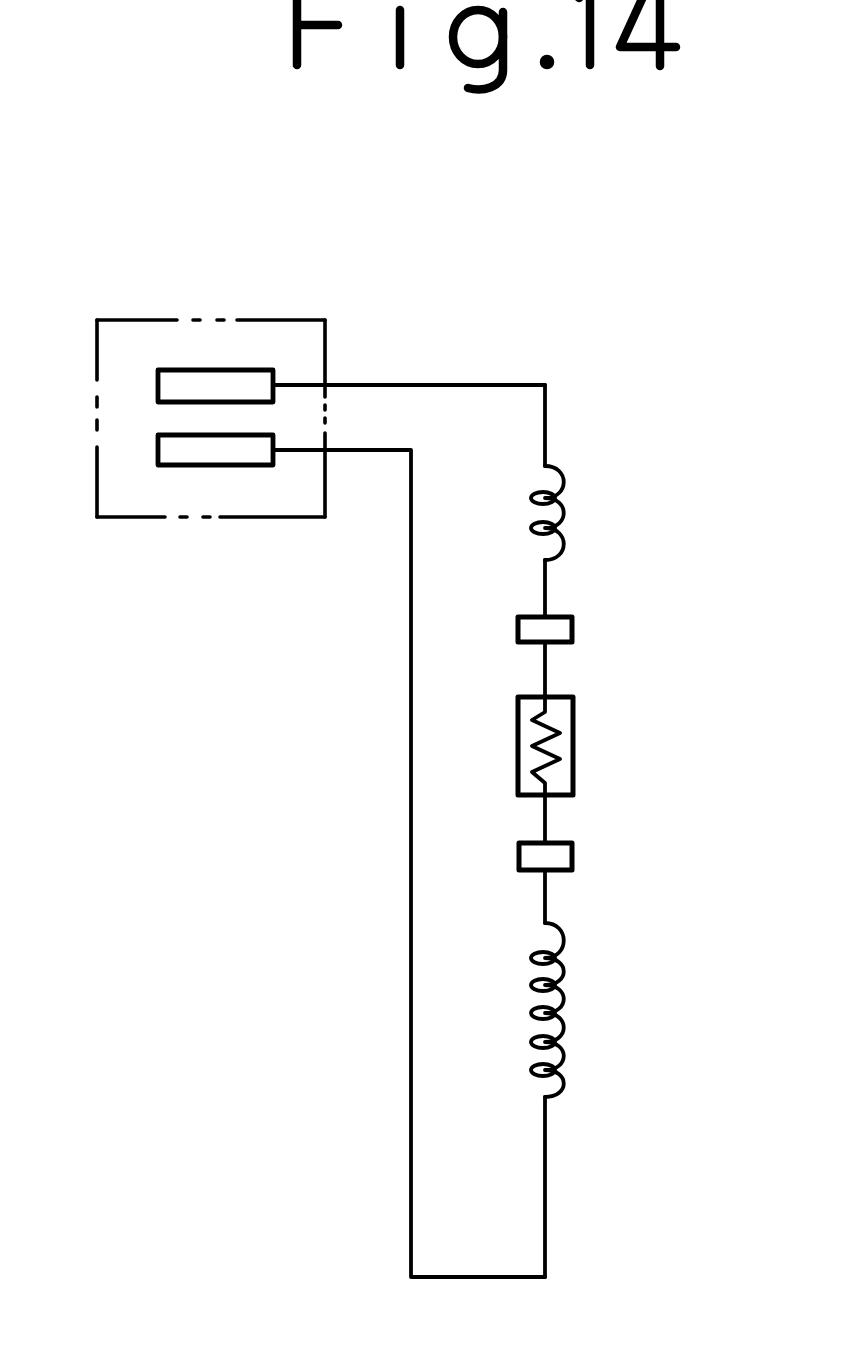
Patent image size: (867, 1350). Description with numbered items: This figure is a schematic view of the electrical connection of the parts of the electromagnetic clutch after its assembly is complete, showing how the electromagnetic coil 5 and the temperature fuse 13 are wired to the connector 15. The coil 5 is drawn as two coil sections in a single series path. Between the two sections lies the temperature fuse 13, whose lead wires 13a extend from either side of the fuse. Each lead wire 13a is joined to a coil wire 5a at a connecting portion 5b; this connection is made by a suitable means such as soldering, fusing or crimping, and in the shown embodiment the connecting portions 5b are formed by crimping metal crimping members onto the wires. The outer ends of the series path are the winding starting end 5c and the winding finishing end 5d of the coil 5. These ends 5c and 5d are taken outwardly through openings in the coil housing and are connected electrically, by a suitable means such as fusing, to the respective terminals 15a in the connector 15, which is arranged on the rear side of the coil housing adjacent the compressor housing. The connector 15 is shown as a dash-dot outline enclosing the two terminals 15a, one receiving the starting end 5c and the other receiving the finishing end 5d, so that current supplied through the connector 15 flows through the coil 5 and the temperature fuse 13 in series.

The connector 15 is at (247, 320).
The terminals 15a is at (183, 385).
The electromagnetic coil 5 is at (564, 510).
The coil wire end 5a is at (545, 587).
The connecting portion 5b is at (572, 623).
The winding starting end 5c is at (545, 420).
The winding finishing end 5d is at (548, 1227).
The temperature fuse 13 is at (573, 758).
The lead wires 13a is at (545, 675).